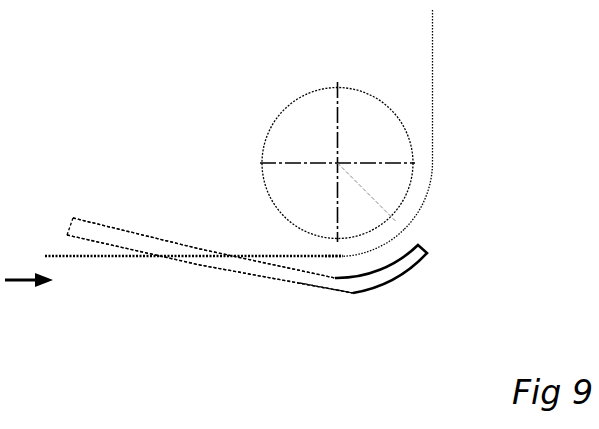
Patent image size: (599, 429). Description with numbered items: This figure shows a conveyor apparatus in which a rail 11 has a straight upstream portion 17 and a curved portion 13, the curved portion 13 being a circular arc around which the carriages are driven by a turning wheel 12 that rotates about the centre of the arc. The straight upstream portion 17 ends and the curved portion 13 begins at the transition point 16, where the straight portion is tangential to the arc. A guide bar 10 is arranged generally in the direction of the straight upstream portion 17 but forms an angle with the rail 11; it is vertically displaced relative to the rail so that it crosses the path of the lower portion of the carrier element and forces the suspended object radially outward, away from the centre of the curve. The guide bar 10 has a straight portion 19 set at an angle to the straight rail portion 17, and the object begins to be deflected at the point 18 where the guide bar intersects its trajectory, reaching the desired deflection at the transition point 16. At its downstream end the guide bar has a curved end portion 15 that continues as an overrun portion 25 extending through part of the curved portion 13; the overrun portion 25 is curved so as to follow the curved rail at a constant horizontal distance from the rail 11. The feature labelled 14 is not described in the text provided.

The guide bar 10 is at (134, 224).
The rail 11 is at (496, 86).
The turning wheel 12 is at (290, 99).
The curved portion 13 is at (421, 235).
The curved guide 14 is at (445, 153).
The curved end portion 15 is at (343, 302).
The transition point 16 is at (285, 239).
The straight upstream portion 17 is at (83, 266).
The intersection point 18 is at (200, 299).
The straight portion 19 is at (204, 308).
The overrun portion 25 is at (411, 284).